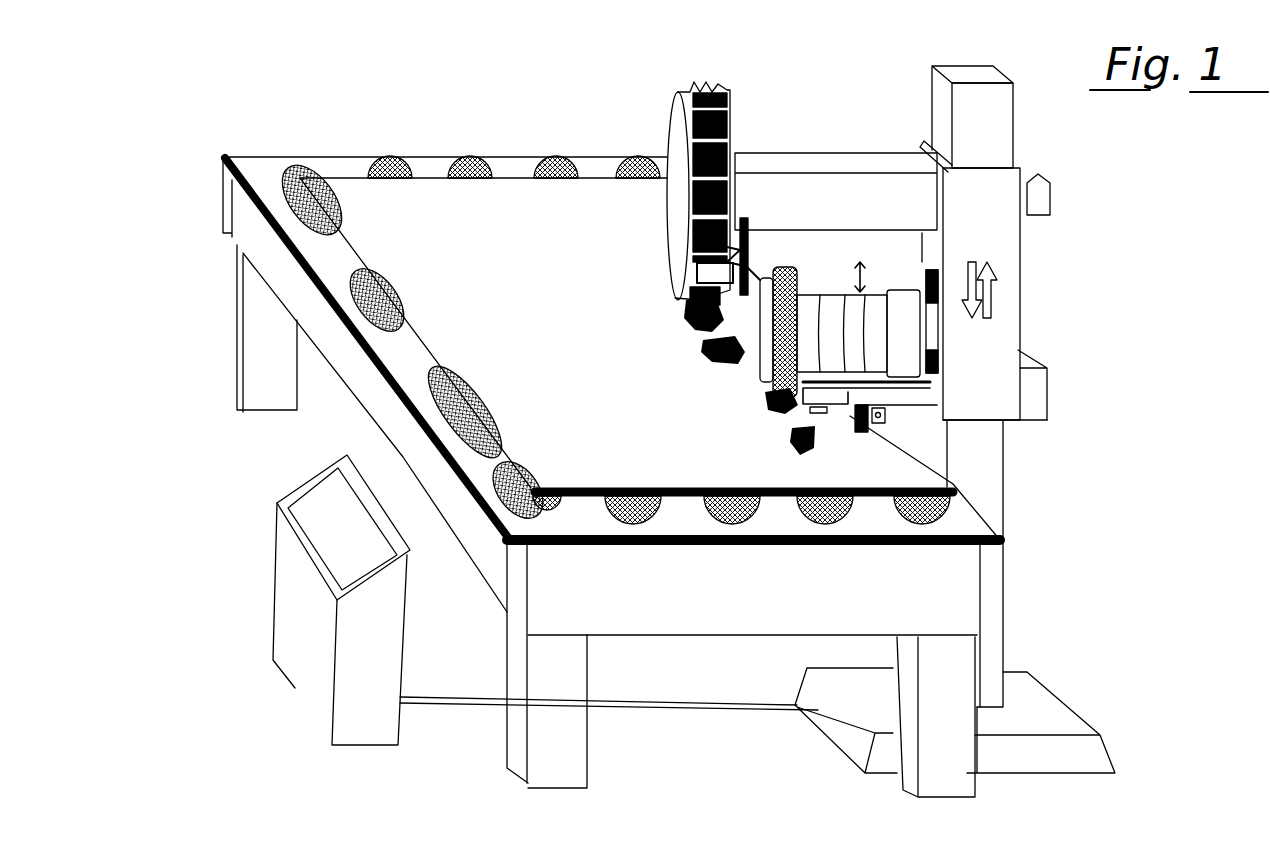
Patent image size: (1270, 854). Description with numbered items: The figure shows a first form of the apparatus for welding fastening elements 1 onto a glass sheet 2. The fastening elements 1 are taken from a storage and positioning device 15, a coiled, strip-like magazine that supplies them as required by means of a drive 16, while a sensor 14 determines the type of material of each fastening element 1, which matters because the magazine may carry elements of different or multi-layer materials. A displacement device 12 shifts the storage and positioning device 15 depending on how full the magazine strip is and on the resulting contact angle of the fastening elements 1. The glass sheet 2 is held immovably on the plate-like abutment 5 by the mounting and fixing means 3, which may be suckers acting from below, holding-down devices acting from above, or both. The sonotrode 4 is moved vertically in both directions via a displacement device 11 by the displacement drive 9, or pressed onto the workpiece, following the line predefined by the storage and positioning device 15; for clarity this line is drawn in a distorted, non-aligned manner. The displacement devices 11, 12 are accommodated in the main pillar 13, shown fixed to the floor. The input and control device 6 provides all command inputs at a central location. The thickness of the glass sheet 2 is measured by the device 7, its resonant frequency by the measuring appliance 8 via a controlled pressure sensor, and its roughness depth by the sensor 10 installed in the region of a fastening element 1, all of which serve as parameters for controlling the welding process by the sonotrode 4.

The fastening element 1 is at (695, 322).
The glass sheet 2 is at (367, 238).
The mounting and fixing means 3 is at (363, 312).
The sonotrode 4 is at (772, 347).
The plate-like abutment 5 is at (405, 409).
The input and control device 6 is at (337, 548).
The device for measuring sheet thickness 7 is at (885, 422).
The measuring appliance 8 is at (887, 415).
The displacement drive 9 is at (1035, 393).
The sensor 10 is at (835, 397).
The displacement device 11 is at (933, 290).
The displacement device 12 is at (997, 223).
The main pillar 13 is at (990, 128).
The sensor 14 is at (733, 255).
The storage and positioning device 15 is at (733, 140).
The drive 16 is at (1050, 187).